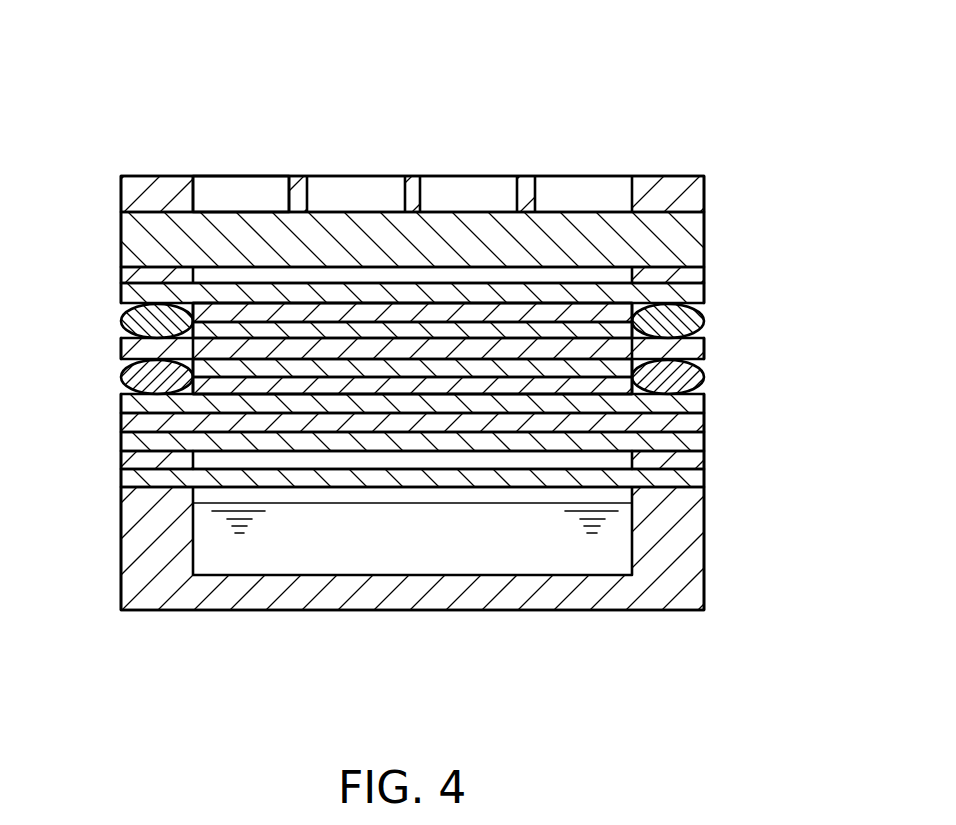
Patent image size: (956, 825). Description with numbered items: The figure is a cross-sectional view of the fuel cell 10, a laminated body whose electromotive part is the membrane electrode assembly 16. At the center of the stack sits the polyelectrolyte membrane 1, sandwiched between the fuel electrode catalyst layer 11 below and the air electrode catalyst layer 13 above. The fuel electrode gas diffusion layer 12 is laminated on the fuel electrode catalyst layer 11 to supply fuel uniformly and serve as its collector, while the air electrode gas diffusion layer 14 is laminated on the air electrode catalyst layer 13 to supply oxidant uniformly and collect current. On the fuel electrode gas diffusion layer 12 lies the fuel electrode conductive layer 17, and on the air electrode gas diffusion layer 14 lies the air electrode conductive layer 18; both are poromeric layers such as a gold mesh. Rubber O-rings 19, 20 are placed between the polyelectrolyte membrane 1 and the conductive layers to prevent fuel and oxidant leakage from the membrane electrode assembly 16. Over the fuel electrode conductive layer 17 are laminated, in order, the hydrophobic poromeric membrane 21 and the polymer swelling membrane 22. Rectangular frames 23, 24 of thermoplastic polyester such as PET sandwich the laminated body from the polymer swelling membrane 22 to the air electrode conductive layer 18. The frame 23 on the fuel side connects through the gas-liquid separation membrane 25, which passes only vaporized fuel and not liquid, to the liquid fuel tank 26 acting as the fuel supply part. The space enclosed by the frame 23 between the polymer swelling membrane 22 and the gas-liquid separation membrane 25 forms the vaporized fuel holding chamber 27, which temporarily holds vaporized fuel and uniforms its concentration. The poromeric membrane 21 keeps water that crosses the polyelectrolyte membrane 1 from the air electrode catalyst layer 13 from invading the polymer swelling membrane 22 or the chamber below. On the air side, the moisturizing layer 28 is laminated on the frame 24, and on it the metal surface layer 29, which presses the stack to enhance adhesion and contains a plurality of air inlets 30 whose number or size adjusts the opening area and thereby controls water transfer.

The fuel cell 10 is at (132, 84).
The polyelectrolyte membrane 1 is at (657, 350).
The fuel electrode catalyst layer 11 is at (620, 356).
The fuel electrode gas diffusion layer 12 is at (613, 386).
The air electrode catalyst layer 13 is at (620, 328).
The air electrode gas diffusion layer 14 is at (603, 307).
The membrane electrode assembly 16 is at (805, 185).
The fuel electrode conductive layer 17 is at (134, 408).
The air electrode conductive layer 18 is at (136, 294).
The rubber O-ring 19 is at (126, 378).
The rubber O-ring 20 is at (122, 323).
The hydrophobic poromeric membrane 21 is at (683, 422).
The polymer swelling membrane 22 is at (131, 442).
The frame 23 is at (126, 458).
The frame 24 is at (148, 277).
The gas-liquid separation membrane 25 is at (687, 472).
The liquid fuel tank 26 is at (645, 597).
The vaporized fuel holding chamber 27 is at (217, 460).
The moisturizing layer 28 is at (143, 245).
The surface layer 29 is at (146, 198).
The air inlet 30 is at (240, 192).